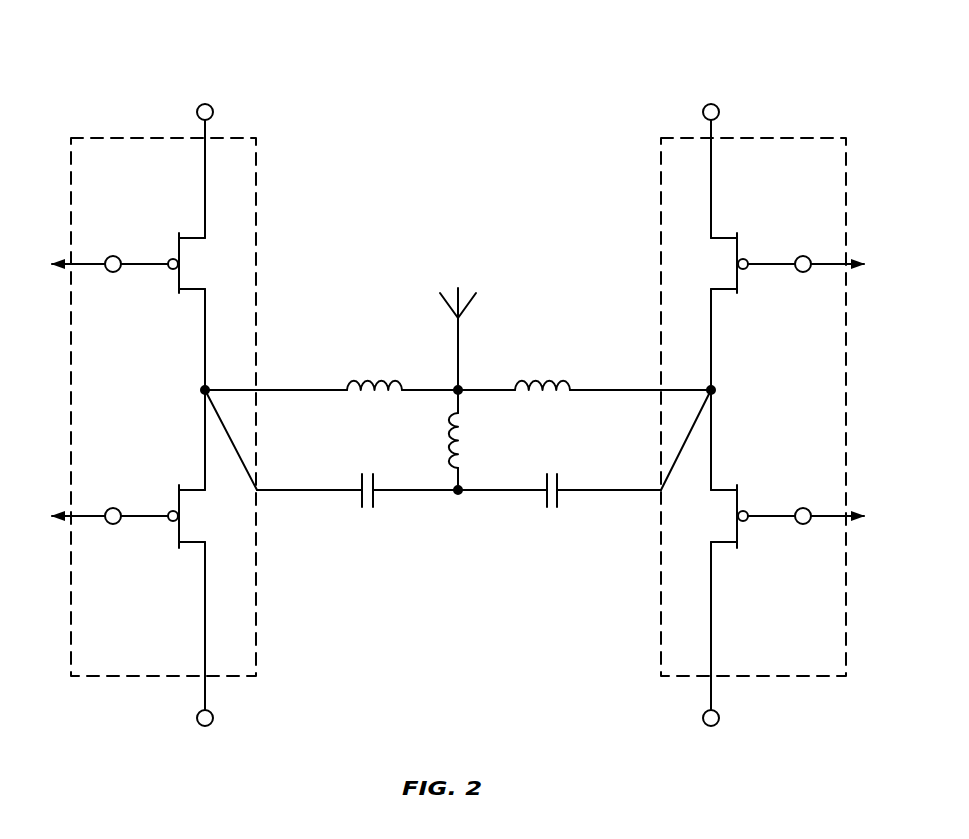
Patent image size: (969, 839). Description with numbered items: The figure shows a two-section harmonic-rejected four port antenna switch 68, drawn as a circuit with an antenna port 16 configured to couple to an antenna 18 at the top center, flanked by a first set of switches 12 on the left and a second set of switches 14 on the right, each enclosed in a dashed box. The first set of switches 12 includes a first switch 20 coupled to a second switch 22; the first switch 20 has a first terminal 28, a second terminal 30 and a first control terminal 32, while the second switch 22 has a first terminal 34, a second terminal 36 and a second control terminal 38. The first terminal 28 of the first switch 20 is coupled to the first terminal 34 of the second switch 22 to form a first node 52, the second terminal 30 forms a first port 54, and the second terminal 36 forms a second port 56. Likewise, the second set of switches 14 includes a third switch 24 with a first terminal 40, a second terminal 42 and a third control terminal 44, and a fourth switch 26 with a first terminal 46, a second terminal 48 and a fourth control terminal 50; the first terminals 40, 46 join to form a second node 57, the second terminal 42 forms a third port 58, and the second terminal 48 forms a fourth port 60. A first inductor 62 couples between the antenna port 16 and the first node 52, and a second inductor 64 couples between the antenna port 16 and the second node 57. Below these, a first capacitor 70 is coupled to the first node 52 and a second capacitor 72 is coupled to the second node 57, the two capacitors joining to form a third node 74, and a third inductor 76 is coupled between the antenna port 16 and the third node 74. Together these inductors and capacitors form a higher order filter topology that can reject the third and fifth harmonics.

The first set of switches 12 is at (91, 663).
The second set of switches 14 is at (800, 663).
The antenna port 16 is at (462, 386).
The antenna 18 is at (460, 332).
The first switch 20 is at (128, 245).
The second switch 22 is at (128, 528).
The third switch 24 is at (787, 243).
The fourth switch 26 is at (787, 520).
The first terminal of the first switch 28 is at (187, 293).
The second terminal of the first switch 30 is at (195, 237).
The first control terminal 32 is at (147, 262).
The first terminal of the second switch 34 is at (193, 487).
The second terminal of the second switch 36 is at (187, 547).
The second control terminal 38 is at (147, 513).
The first terminal of the third switch 40 is at (728, 293).
The second terminal of the third switch 42 is at (727, 237).
The third control terminal 44 is at (767, 262).
The first terminal of the fourth switch 46 is at (723, 487).
The second terminal of the fourth switch 48 is at (728, 547).
The fourth control terminal 50 is at (772, 513).
The first node 52 is at (203, 389).
The first port 54 is at (213, 110).
The second port 56 is at (213, 720).
The second node 57 is at (713, 389).
The third port 58 is at (719, 110).
The fourth port 60 is at (719, 720).
The first inductor 62 is at (365, 393).
The second inductor 64 is at (535, 393).
The two-section harmonic-rejected four port antenna switch 68 is at (534, 64).
The first capacitor 70 is at (374, 500).
The second capacitor 72 is at (559, 500).
The third node 74 is at (460, 496).
The third inductor 76 is at (463, 435).